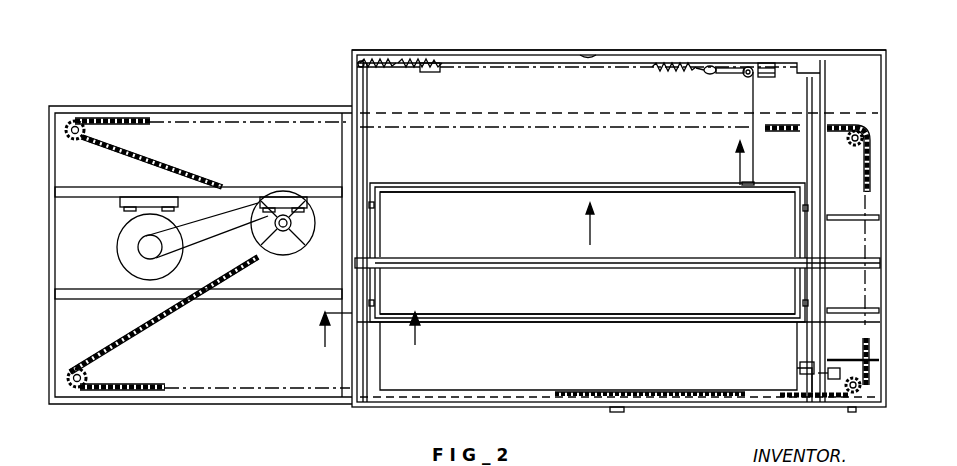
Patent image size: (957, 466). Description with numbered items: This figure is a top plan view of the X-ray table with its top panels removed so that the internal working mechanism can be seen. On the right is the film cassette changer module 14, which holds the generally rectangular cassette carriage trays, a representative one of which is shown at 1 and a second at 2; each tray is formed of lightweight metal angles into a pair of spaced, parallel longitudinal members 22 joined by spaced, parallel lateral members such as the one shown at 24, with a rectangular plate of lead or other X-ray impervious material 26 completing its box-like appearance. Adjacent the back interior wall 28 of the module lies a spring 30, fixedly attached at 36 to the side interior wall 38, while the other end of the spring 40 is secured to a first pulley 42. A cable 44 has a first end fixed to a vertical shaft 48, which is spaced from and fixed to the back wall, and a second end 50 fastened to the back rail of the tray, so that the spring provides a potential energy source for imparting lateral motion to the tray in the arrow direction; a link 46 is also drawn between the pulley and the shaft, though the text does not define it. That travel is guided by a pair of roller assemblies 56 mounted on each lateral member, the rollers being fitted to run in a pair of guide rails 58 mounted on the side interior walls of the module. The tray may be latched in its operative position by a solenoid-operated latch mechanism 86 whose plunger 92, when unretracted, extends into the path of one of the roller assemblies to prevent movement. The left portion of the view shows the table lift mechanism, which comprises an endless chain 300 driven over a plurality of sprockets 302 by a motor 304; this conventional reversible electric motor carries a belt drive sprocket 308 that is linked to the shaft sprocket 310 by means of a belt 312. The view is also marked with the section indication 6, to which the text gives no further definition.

The tray 1 is at (630, 323).
The tray 2 is at (580, 395).
The section line 6 is at (367, 331).
The film cassette changer module 14 is at (455, 50).
The longitudinal members 22 is at (660, 190).
The lateral member 24 is at (380, 240).
The X-ray impervious plate 26 is at (580, 299).
The back interior wall 28 is at (588, 56).
The spring 30 is at (666, 70).
The spring attachment point 36 is at (364, 62).
The side interior wall 38 is at (370, 67).
The other end of the spring 40 is at (701, 68).
The first pulley 42 is at (710, 74).
The cable 44 is at (754, 110).
The link bar 46 is at (734, 73).
The vertical shaft 48 is at (749, 67).
The second end of cable 50 is at (750, 186).
The roller assemblies 56 is at (372, 205).
The guide rails 58 is at (362, 153).
The solenoid-operated latch mechanism 86 is at (836, 368).
The plunger 92 is at (806, 370).
The endless chain 300 is at (172, 313).
The sprockets 302 is at (85, 131).
The motor 304 is at (122, 252).
The belt drive sprocket 308 is at (176, 238).
The shaft sprocket 310 is at (300, 245).
The belt 312 is at (136, 233).